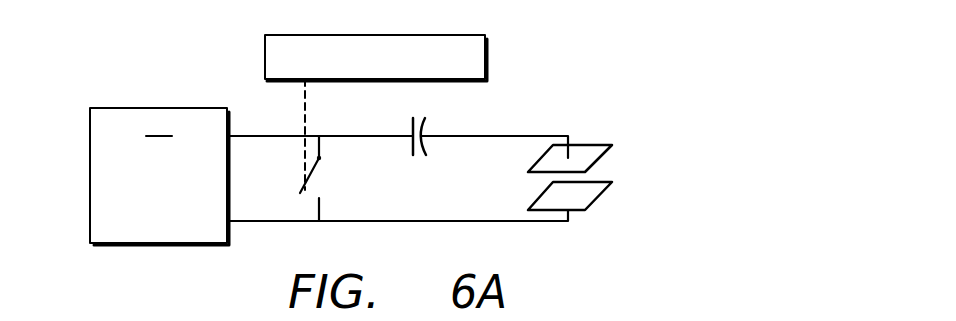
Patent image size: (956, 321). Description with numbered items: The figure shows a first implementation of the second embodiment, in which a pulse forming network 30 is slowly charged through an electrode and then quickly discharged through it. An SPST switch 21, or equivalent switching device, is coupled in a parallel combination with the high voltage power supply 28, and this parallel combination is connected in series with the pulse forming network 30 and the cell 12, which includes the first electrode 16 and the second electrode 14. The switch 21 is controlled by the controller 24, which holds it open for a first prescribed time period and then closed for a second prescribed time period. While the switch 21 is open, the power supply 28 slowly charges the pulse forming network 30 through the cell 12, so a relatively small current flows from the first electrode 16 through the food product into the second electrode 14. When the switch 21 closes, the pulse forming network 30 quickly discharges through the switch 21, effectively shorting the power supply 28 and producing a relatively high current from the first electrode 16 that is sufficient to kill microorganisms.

The cell 12 is at (610, 176).
The second electrode 14 is at (590, 197).
The first electrode 16 is at (590, 148).
The SPST switch 21 is at (312, 177).
The controller 24 is at (485, 57).
The high voltage power supply 28 is at (159, 176).
The pulse forming network 30 is at (424, 117).